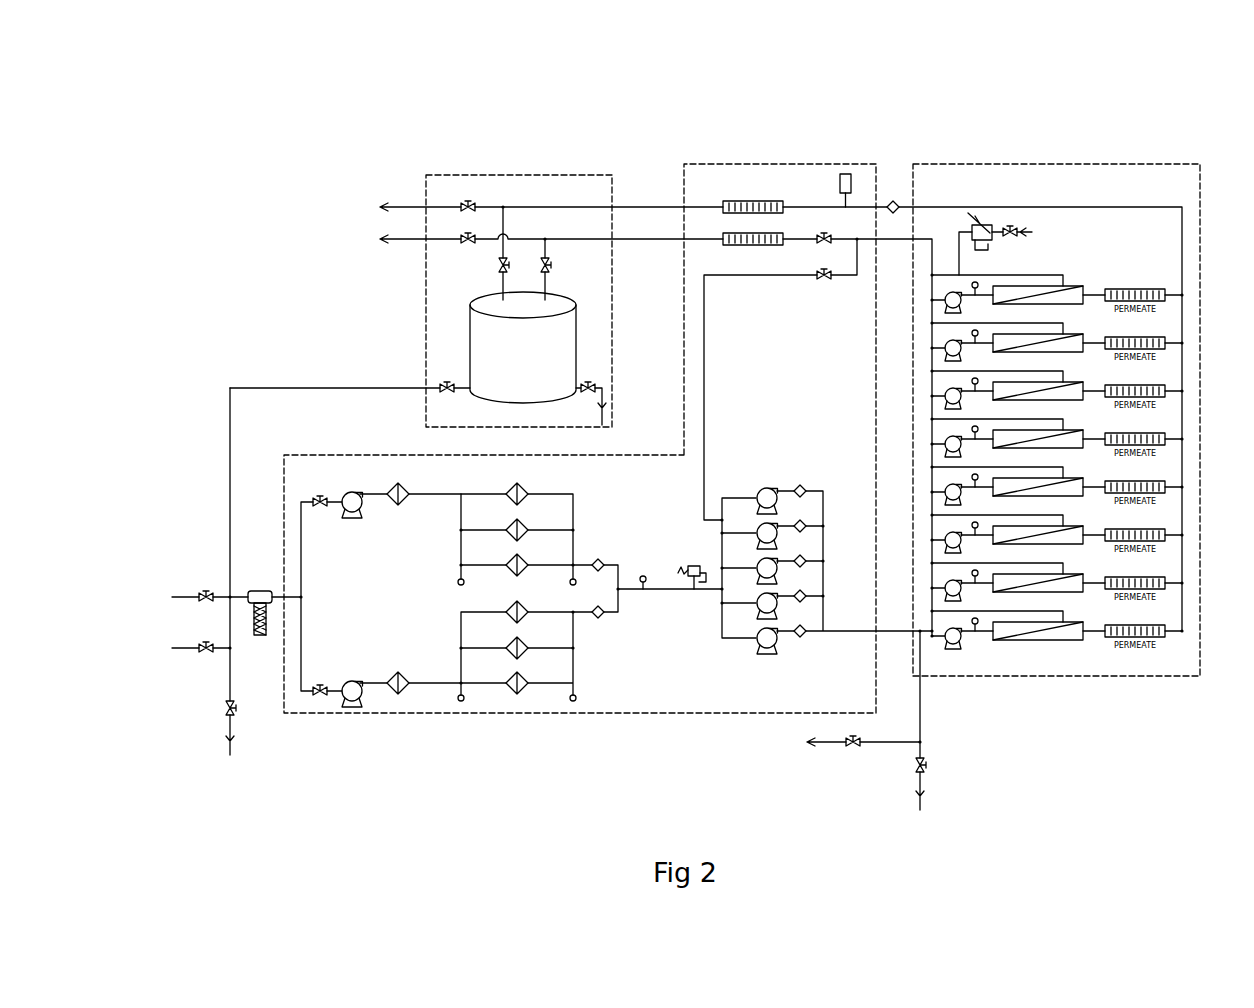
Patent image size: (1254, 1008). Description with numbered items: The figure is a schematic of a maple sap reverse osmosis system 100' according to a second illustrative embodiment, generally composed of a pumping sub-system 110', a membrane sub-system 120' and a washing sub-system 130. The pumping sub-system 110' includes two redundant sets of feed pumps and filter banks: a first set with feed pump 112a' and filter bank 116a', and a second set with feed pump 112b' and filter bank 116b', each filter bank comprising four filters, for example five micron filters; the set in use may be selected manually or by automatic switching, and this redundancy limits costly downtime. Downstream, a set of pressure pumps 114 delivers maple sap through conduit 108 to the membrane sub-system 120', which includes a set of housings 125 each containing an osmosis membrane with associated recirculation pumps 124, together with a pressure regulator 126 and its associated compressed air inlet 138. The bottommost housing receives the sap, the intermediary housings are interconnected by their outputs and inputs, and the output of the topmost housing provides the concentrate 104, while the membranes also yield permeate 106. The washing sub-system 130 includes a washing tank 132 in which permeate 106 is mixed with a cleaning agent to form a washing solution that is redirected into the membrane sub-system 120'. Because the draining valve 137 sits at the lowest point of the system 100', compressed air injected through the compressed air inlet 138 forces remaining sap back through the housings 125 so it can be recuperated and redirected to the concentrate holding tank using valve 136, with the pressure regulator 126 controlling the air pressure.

The maple sap reverse osmosis system 100' is at (671, 429).
The pumping sub-system 110' is at (609, 424).
The membrane sub-system 120' is at (1056, 406).
The washing sub-system 130 is at (426, 333).
The washing tank 132 is at (523, 347).
The permeate 106 is at (723, 203).
The concentrate 104 is at (723, 243).
The pressure pumps 114 is at (767, 487).
The feed pump 112a' is at (394, 490).
The feed pump 112b' is at (394, 678).
The filter bank 116a' is at (539, 527).
The filter bank 116b' is at (493, 648).
The recirculation pumps 124 is at (962, 294).
The housings 125 is at (1075, 287).
The pressure regulator 126 is at (983, 222).
The compressed air inlet 138 is at (1016, 226).
The conduit 108 is at (920, 700).
The valve 136 is at (848, 752).
The draining valve 137 is at (926, 776).